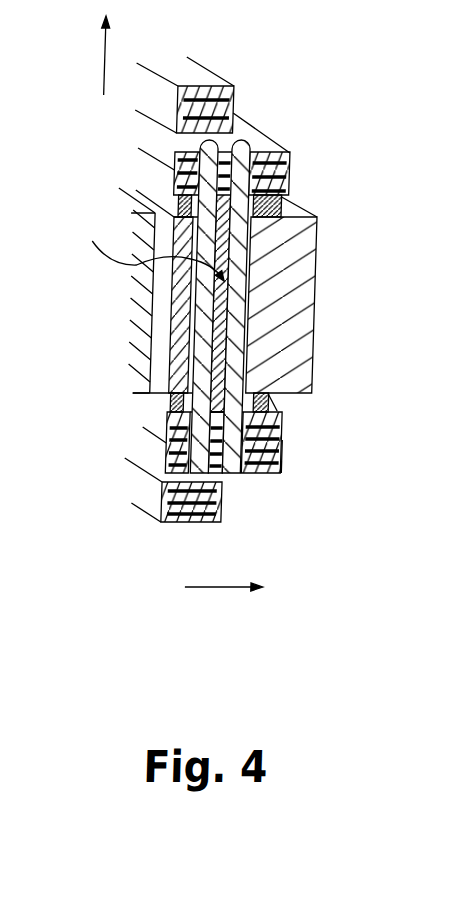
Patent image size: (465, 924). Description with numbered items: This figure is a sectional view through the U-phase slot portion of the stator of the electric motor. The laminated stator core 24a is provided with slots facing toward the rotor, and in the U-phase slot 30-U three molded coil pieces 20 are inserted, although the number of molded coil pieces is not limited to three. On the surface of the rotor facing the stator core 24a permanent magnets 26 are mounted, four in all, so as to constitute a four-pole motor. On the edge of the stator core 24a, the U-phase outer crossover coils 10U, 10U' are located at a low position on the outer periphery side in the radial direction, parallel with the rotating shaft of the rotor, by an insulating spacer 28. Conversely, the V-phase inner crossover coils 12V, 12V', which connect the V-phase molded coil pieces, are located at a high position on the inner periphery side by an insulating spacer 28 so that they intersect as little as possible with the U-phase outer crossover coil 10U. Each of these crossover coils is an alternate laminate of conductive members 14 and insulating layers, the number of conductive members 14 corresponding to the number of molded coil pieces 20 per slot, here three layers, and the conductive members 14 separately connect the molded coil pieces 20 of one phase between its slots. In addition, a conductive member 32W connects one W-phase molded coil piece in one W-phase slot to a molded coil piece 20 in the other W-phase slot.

The V-phase inner crossover coil 12V is at (221, 87).
The U-phase outer crossover coil 10U is at (250, 146).
The conductive member 14 is at (290, 153).
The insulating spacer 28 is at (272, 213).
The molded coil piece 20 is at (242, 286).
The stator core 24a is at (309, 360).
The permanent magnet 26 is at (152, 336).
The U-phase slot 30-U is at (136, 247).
The conductive member 32W is at (291, 466).
The U-phase outer crossover coil 10U' is at (247, 468).
The V-phase inner crossover coil 12V' is at (124, 490).